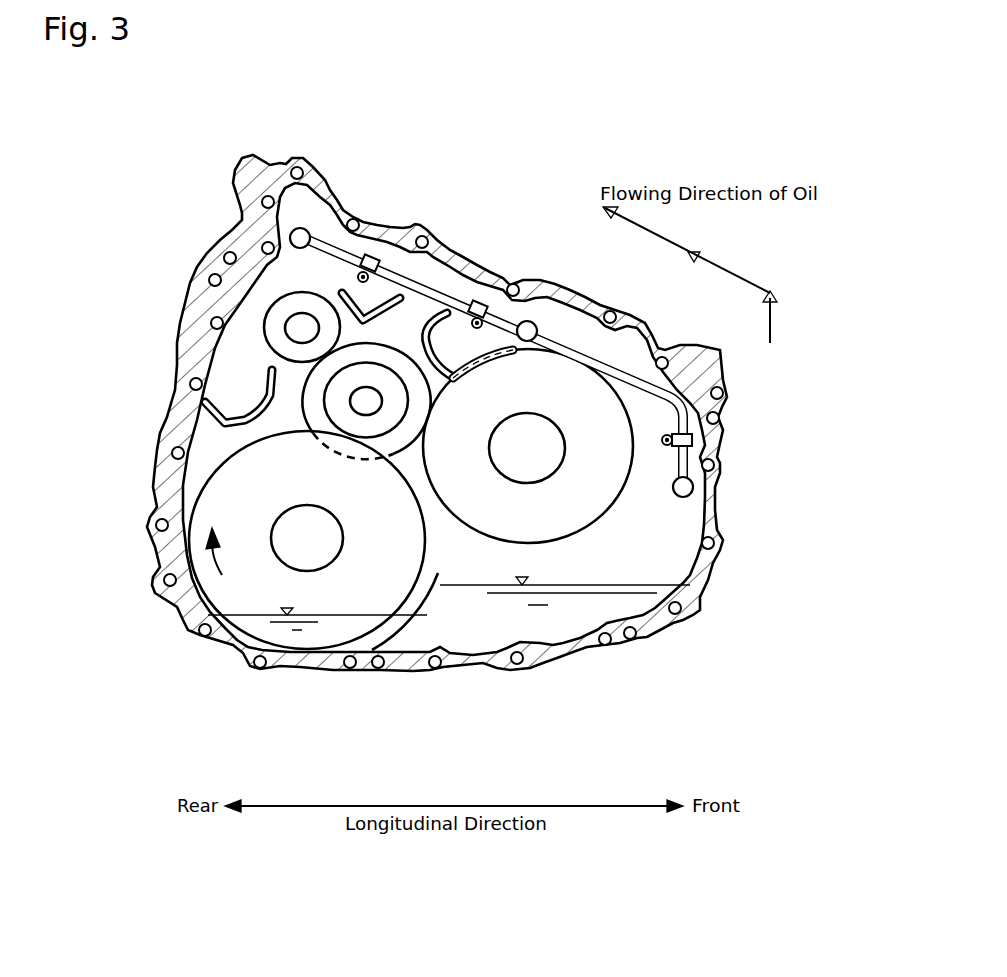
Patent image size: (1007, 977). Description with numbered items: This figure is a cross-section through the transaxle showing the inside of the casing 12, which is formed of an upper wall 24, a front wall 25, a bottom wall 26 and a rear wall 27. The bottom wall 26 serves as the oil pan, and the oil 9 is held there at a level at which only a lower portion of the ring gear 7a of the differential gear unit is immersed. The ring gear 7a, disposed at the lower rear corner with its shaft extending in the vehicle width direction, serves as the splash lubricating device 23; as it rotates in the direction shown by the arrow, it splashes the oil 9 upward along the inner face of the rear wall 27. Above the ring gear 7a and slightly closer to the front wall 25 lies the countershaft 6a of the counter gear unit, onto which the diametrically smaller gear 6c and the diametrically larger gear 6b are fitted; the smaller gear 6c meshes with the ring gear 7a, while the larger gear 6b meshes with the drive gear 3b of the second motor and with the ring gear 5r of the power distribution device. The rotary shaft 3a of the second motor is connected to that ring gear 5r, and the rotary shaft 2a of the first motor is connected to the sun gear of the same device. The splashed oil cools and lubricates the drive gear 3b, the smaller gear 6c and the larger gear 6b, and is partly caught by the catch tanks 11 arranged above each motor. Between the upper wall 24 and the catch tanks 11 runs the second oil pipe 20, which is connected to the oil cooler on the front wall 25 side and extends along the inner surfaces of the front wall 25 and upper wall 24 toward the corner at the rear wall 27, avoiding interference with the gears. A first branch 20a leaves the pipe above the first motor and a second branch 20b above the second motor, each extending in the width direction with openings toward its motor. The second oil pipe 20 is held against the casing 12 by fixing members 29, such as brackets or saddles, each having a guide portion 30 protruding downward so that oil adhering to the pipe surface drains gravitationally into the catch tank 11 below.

The casing 12 is at (178, 193).
The upper wall 24 is at (457, 257).
The rear wall 27 is at (177, 368).
The front wall 25 is at (707, 497).
The bottom wall 26 is at (488, 670).
The oil 9 is at (580, 618).
The ring gear 7a is at (210, 588).
The splash lubricating device 23 is at (200, 478).
The rotary shaft 2a is at (543, 482).
The ring gear 5r is at (612, 507).
The rotary shaft 3a is at (286, 330).
The drive gear 3b is at (266, 313).
The countershaft 6a is at (352, 397).
The diametrically larger gear 6b is at (305, 415).
The diametrically smaller gear 6c is at (325, 435).
The catch tank 11 is at (197, 403).
The second oil pipe 20 is at (690, 488).
The first branch 20a is at (527, 322).
The second branch 20b is at (302, 230).
The fixing member 29 is at (369, 258).
The guide portion 30 is at (355, 280).